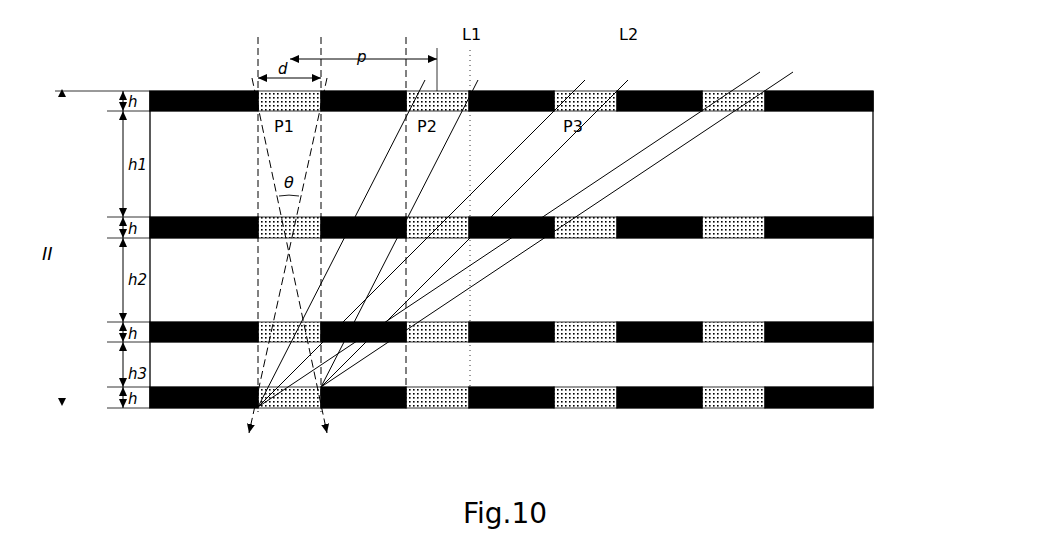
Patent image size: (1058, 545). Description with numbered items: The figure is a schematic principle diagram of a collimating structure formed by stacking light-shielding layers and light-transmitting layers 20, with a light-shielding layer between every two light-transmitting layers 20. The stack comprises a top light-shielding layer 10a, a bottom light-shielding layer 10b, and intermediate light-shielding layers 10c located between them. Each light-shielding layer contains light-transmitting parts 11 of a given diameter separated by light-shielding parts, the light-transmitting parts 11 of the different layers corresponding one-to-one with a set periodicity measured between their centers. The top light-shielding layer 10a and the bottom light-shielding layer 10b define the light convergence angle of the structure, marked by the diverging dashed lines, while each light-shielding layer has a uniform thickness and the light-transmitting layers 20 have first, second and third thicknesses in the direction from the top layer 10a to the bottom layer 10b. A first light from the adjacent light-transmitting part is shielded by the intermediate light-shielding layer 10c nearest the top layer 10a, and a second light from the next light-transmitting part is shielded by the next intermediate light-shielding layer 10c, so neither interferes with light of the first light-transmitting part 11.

The top light-shielding layer 10a is at (873, 93).
The bottom light-shielding layer 10b is at (873, 391).
The intermediate light-shielding layer 10c is at (873, 221).
The light-transmitting part 11 is at (722, 98).
The light-transmitting layer 20 is at (863, 163).